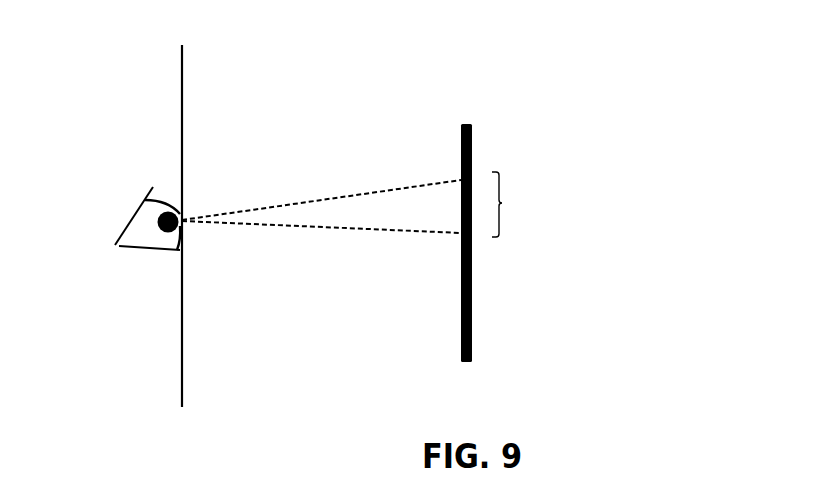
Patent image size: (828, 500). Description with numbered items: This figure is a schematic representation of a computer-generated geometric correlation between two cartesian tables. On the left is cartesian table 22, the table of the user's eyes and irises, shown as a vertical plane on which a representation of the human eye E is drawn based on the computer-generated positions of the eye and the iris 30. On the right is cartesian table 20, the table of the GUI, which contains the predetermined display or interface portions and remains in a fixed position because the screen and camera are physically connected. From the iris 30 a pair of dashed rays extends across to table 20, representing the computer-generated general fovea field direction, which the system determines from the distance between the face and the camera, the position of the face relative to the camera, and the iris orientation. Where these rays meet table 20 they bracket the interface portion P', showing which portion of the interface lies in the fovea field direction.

The cartesian table 20 is at (438, 109).
The cartesian table 22 is at (217, 83).
The iris 30 is at (182, 217).
The human eye E is at (127, 188).
The interface portion P' is at (514, 204).